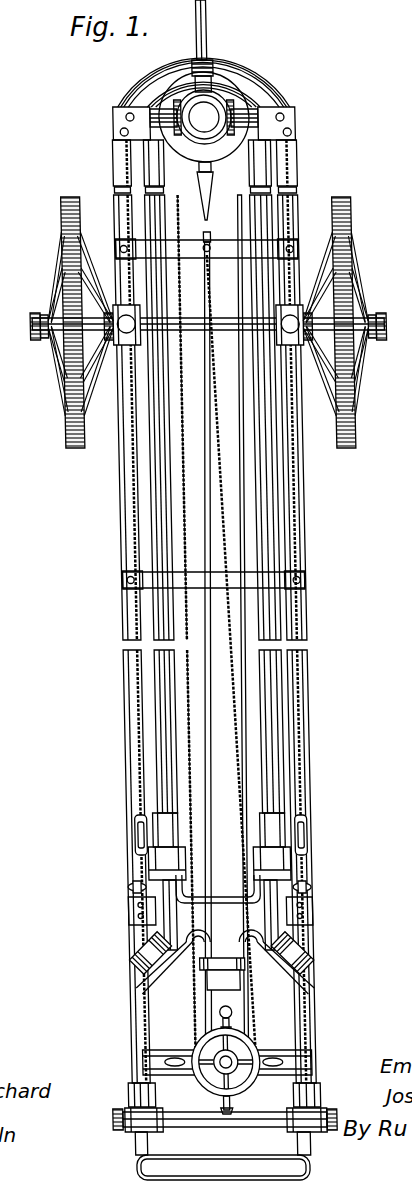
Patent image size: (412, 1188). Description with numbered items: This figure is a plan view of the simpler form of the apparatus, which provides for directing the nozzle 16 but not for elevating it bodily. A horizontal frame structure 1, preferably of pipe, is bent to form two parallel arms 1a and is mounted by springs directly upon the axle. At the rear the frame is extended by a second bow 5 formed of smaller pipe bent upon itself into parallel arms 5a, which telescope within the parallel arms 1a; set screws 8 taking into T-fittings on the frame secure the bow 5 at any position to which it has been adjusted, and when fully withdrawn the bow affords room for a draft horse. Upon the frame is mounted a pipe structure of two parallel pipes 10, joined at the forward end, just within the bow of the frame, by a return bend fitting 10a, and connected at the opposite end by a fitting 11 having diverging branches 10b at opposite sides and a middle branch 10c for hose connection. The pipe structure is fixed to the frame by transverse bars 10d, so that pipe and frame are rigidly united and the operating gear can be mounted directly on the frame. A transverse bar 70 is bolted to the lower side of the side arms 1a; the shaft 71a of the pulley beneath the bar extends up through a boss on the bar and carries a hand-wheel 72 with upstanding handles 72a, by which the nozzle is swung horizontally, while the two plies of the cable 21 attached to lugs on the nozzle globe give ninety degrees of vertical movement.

The horizontal frame structure 1 is at (222, 646).
The parallel arms 1a is at (114, 508).
The second bow 5 is at (233, 1156).
The parallel arms 5a is at (126, 1145).
The set screws 8 is at (308, 1111).
The parallel pipes 10 is at (251, 530).
The return bend fitting 10a is at (172, 70).
The diverging branches 10b is at (114, 955).
The middle branch 10c is at (205, 975).
The transverse bars 10d is at (222, 252).
The fitting 11 is at (218, 900).
The nozzle 16 is at (210, 28).
The cable 21 is at (172, 743).
The transverse bar 70 is at (273, 1053).
The shaft 71a is at (202, 1070).
The hand-wheel 72 is at (222, 1055).
The upstanding handles 72a is at (211, 1110).